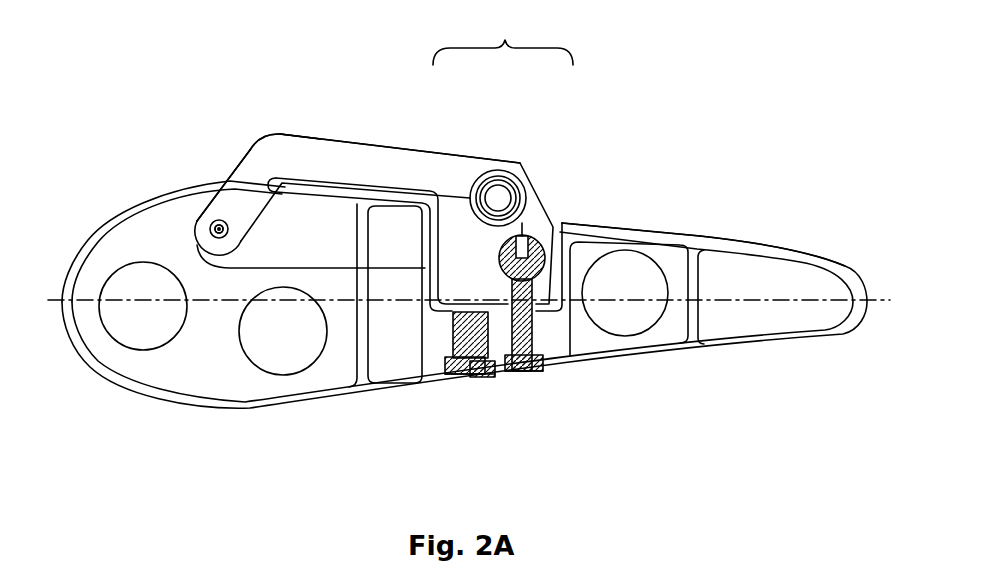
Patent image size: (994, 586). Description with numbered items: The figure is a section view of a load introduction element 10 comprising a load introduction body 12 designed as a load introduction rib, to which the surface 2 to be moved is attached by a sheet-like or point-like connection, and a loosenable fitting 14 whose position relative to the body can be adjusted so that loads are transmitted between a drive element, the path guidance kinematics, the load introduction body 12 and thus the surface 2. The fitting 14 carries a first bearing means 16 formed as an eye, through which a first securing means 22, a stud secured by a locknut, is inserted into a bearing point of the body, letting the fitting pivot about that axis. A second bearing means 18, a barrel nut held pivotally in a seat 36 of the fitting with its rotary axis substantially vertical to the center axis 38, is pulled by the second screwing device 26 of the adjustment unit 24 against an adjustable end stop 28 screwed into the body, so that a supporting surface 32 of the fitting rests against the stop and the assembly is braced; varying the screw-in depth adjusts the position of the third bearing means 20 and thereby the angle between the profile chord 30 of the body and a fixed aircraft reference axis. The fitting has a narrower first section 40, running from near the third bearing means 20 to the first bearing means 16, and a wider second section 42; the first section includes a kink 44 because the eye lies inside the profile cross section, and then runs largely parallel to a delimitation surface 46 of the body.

The surface 2 is at (720, 236).
The load introduction element 10 is at (332, 113).
The load introduction body 12 is at (252, 387).
The fitting 14 is at (407, 167).
The first bearing means 16 is at (212, 224).
The second bearing means 18 is at (633, 241).
The third bearing means 20 is at (517, 163).
The first securing means 22 is at (207, 230).
The adjustment unit 24 is at (521, 405).
The second screwing device 26 is at (530, 370).
The end stop 28 is at (473, 373).
The profile chord 30 is at (887, 293).
The supporting surface 32 is at (472, 303).
The seat 36 is at (548, 252).
The center axis 38 is at (537, 234).
The first section 40 is at (337, 268).
The second section 42 is at (503, 36).
The kink 44 is at (282, 116).
The delimitation surface 46 is at (193, 137).